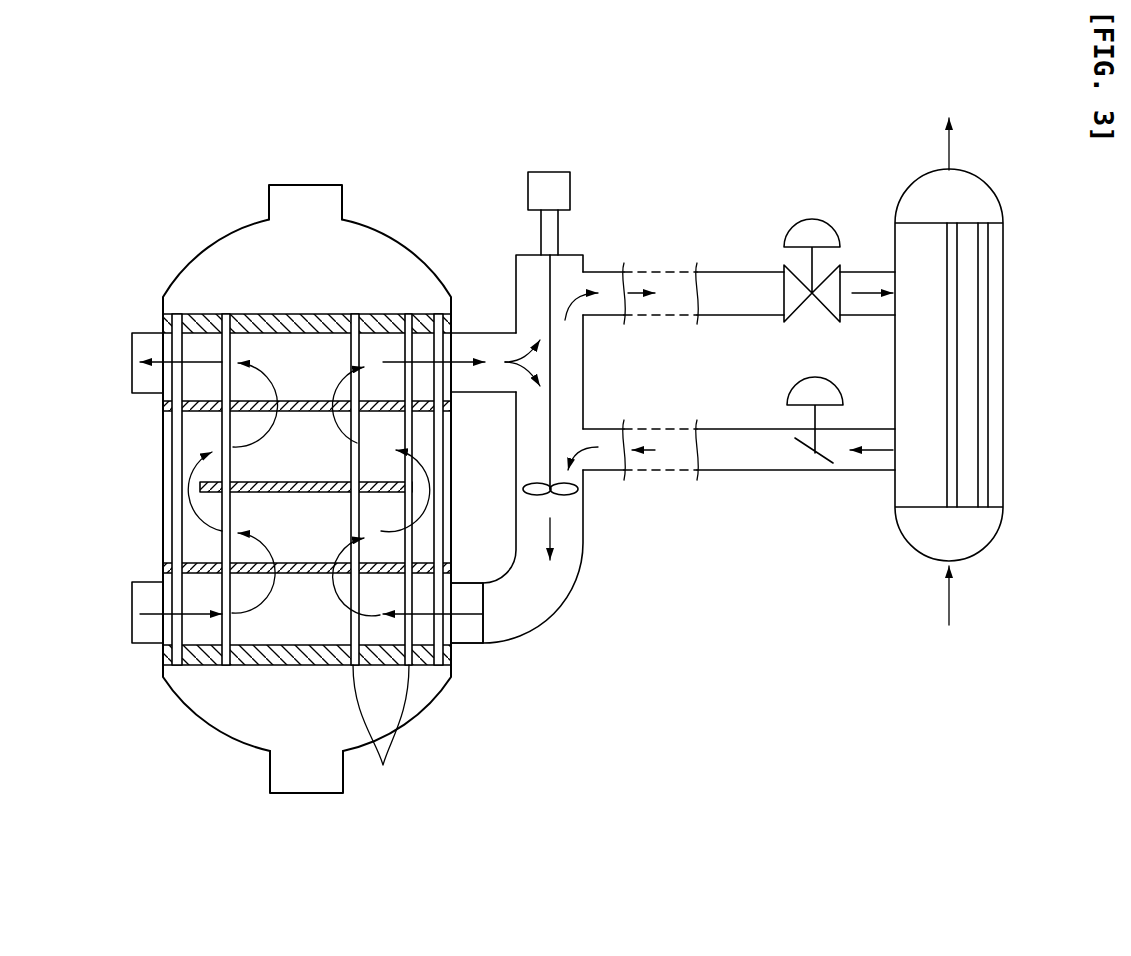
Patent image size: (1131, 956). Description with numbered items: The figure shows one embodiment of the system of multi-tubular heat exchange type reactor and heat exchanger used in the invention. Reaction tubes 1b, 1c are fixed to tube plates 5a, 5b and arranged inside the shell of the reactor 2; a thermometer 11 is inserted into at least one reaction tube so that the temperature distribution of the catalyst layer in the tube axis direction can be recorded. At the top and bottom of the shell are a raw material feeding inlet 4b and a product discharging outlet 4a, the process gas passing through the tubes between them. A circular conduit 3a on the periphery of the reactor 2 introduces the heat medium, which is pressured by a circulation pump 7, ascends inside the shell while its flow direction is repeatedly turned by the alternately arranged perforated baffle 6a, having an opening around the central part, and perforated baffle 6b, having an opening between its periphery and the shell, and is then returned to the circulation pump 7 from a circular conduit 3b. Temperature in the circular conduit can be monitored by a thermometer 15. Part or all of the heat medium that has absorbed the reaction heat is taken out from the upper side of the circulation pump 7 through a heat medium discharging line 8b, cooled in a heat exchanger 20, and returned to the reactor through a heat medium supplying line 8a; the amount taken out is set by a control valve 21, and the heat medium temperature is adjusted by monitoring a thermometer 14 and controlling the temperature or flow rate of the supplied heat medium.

The reaction tube 1b is at (227, 314).
The reaction tube 1c is at (176, 314).
The reactor 2 is at (163, 493).
The circular conduit 3a is at (132, 614).
The circular conduit 3b is at (132, 365).
The product discharging outlet 4a is at (307, 795).
The raw material feeding inlet 4b is at (294, 185).
The tube plate 5a is at (382, 320).
The tube plate 5b is at (303, 667).
The perforated baffle 6a is at (297, 563).
The perforated baffle 6b is at (297, 482).
The circulation pump 7 is at (550, 442).
The heat medium supplying line 8a is at (731, 428).
The heat medium discharging line 8b is at (730, 293).
The thermometer 11 is at (397, 556).
The thermometer 14 is at (516, 601).
The thermometer 15 is at (465, 601).
The heat exchanger 20 is at (820, 213).
The control valve 21 is at (972, 188).